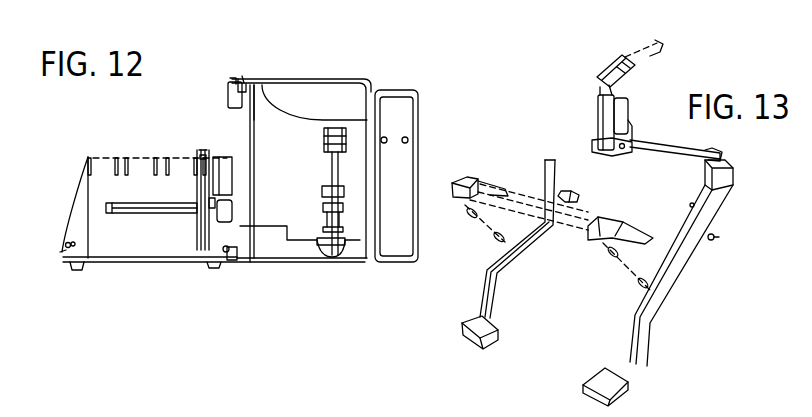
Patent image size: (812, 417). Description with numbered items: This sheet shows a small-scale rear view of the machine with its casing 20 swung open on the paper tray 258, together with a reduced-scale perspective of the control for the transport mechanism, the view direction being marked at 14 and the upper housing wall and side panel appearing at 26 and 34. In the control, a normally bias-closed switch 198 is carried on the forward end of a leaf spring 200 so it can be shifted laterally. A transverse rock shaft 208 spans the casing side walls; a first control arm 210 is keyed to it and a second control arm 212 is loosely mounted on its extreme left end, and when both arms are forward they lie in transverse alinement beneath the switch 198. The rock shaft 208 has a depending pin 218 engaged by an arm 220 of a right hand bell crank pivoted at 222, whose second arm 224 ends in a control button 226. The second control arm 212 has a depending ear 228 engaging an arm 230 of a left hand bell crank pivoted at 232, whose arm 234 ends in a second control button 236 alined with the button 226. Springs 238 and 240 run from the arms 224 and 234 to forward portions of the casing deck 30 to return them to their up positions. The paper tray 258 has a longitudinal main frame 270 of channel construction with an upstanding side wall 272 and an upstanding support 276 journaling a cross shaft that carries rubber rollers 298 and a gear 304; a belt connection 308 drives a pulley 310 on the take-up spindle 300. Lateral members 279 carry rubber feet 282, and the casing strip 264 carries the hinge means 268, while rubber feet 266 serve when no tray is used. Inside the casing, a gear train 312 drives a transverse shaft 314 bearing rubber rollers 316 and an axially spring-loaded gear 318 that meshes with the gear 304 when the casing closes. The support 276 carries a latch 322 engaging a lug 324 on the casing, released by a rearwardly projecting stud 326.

In FIG. 13, the view direction arrow 14 is at (578, 95).
In FIG. 12, the casing 20 is at (302, 79).
In FIG. 12, the housing upper wall 26 is at (350, 88).
In FIG. 13, the casing deck 30 is at (470, 180).
In FIG. 12, the side panel 34 is at (420, 100).
In FIG. 13, the switch 198 is at (616, 38).
In FIG. 13, the leaf spring 200 is at (660, 55).
In FIG. 13, the rock shaft 208 is at (670, 145).
In FIG. 13, the first control arm 210 is at (628, 106).
In FIG. 13, the second control arm 212 is at (597, 118).
In FIG. 13, the depending pin 218 is at (720, 157).
In FIG. 13, the arm 220 is at (725, 185).
In FIG. 13, the pivot 222 is at (719, 237).
In FIG. 13, the second arm 224 is at (660, 310).
In FIG. 13, the control button 226 is at (612, 399).
In FIG. 13, the depending ear 228 is at (596, 153).
In FIG. 13, the arm 230 is at (548, 164).
In FIG. 13, the pivot 232 is at (579, 198).
In FIG. 13, the arm 234 is at (517, 232).
In FIG. 13, the second control button 236 is at (462, 330).
In FIG. 13, the spring 238 is at (634, 282).
In FIG. 13, the spring 240 is at (493, 238).
In FIG. 12, the paper tray 258 is at (174, 269).
In FIG. 12, the supporting strip 264 is at (228, 104).
In FIG. 12, the rubber feet 266 is at (233, 77).
In FIG. 12, the hinge means 268 is at (233, 258).
In FIG. 12, the main frame 270 is at (113, 262).
In FIG. 12, the side wall 272 is at (232, 163).
In FIG. 12, the support 276 is at (88, 150).
In FIG. 12, the lateral members 279 is at (193, 263).
In FIG. 12, the rubber feet 282 is at (76, 270).
In FIG. 12, the rubber rollers 298 is at (162, 157).
In FIG. 12, the take-up spindle 300 is at (114, 214).
In FIG. 12, the gear 304 is at (210, 157).
In FIG. 12, the belt connection 308 is at (200, 190).
In FIG. 12, the pulley 310 is at (218, 205).
In FIG. 12, the gear train 312 is at (324, 142).
In FIG. 12, the transverse shaft 314 is at (323, 205).
In FIG. 12, the rubber rollers 316 is at (322, 190).
In FIG. 12, the spring-loaded gear 318 is at (323, 238).
In FIG. 12, the latch 322 is at (60, 245).
In FIG. 12, the lug 324 is at (246, 82).
In FIG. 12, the stud 326 is at (63, 253).